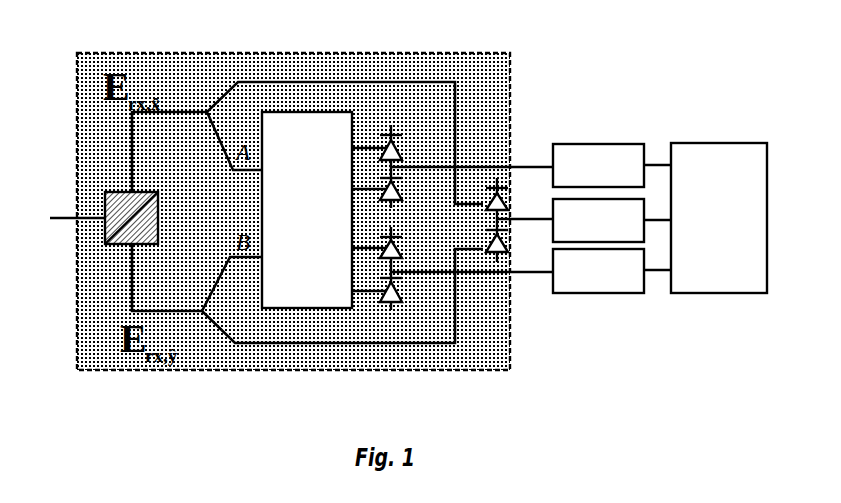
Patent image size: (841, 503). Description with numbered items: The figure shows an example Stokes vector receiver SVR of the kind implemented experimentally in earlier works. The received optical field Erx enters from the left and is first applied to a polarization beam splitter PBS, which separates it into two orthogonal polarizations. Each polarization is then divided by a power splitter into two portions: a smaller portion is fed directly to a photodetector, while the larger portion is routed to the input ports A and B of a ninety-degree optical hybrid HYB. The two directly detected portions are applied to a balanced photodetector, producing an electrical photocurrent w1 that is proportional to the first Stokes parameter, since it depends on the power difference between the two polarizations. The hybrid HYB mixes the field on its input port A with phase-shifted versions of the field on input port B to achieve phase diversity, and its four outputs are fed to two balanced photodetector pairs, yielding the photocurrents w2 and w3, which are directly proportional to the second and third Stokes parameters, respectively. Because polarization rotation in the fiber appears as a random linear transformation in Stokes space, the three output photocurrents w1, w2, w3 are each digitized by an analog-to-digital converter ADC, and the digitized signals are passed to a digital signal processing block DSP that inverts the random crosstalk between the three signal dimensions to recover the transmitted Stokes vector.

The Stokes vector receiver SVR is at (293, 191).
The received field Erx is at (61, 194).
The polarization beam splitter PBS is at (160, 200).
The 90° optical hybrid HYB is at (307, 210).
The photocurrent w1 is at (525, 206).
The photocurrent w2 is at (472, 154).
The photocurrent w3 is at (472, 259).
The analog-to-digital converter ADC is at (598, 218).
The digital signal processing DSP is at (719, 218).